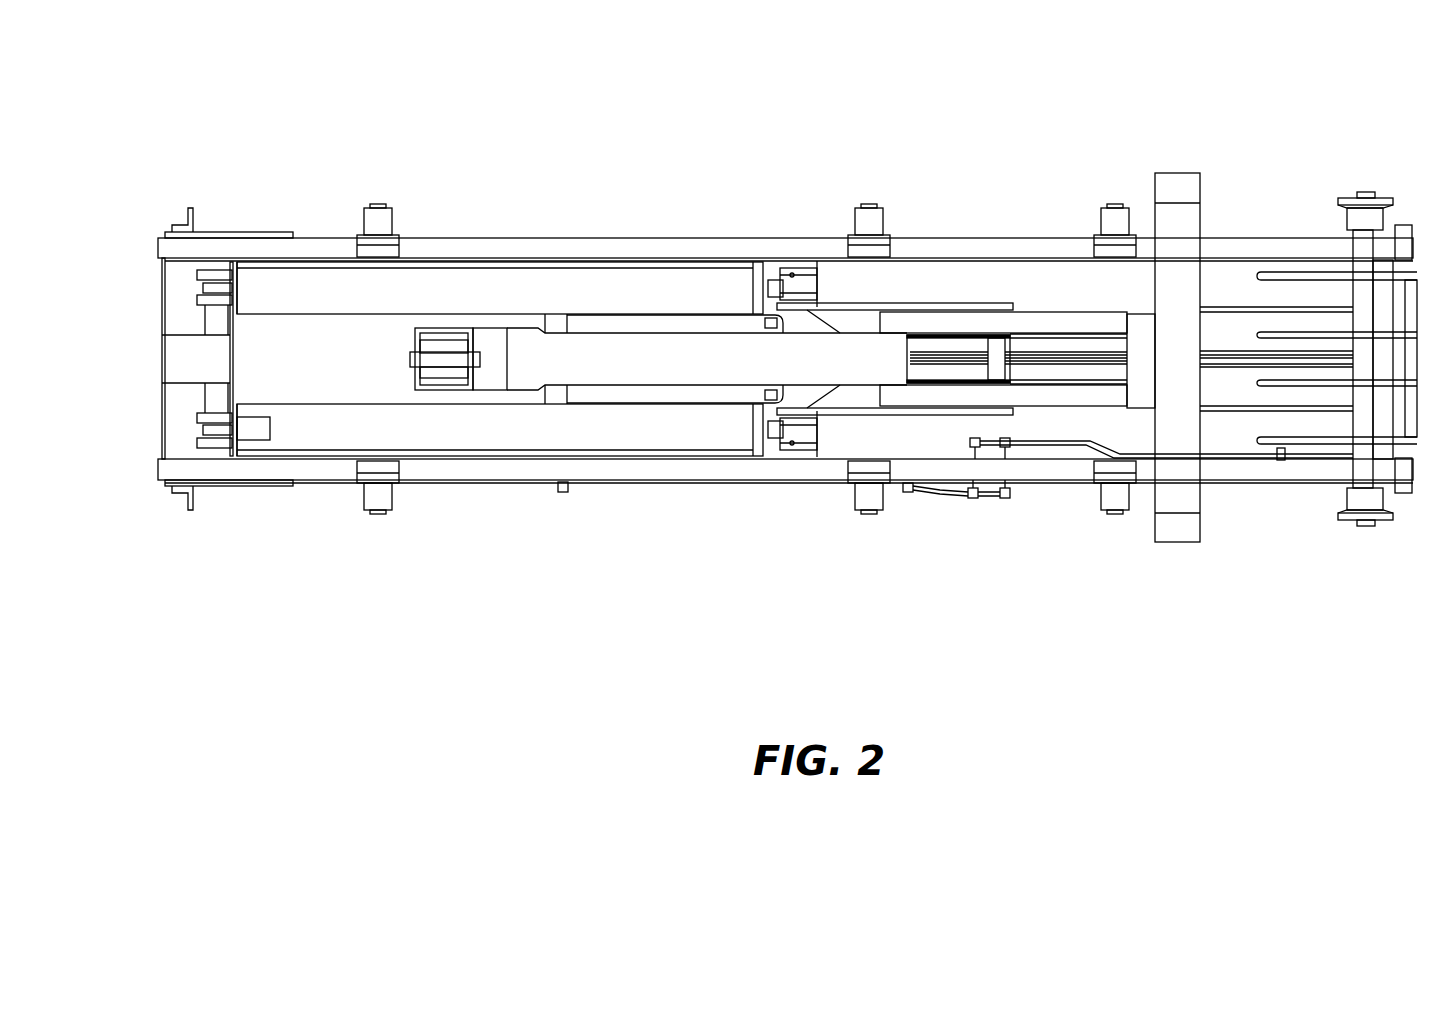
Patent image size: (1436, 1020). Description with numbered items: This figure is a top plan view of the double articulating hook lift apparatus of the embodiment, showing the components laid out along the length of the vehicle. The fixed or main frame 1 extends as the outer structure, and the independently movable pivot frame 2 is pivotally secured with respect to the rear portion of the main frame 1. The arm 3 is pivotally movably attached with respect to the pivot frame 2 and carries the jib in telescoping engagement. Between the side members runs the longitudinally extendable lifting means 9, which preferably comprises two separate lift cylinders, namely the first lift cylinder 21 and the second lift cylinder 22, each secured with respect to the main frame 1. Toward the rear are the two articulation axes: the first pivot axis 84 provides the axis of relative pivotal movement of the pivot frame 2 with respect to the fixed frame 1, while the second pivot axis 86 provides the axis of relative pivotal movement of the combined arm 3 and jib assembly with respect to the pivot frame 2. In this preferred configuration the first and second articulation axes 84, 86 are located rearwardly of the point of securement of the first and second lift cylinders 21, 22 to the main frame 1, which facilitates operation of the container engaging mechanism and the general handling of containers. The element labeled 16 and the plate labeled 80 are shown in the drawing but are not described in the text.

The main frame 1 is at (663, 470).
The pivot frame 2 is at (1052, 400).
The arm 3 is at (662, 347).
The longitudinally extendable lifting means 9 is at (332, 298).
The frame top beam 16 is at (425, 237).
The first lift cylinder 21 is at (518, 278).
The second lift cylinder 22 is at (457, 443).
The end plate 80 is at (1191, 295).
The first pivot axis 84 is at (1367, 190).
The second pivot axis 86 is at (992, 353).